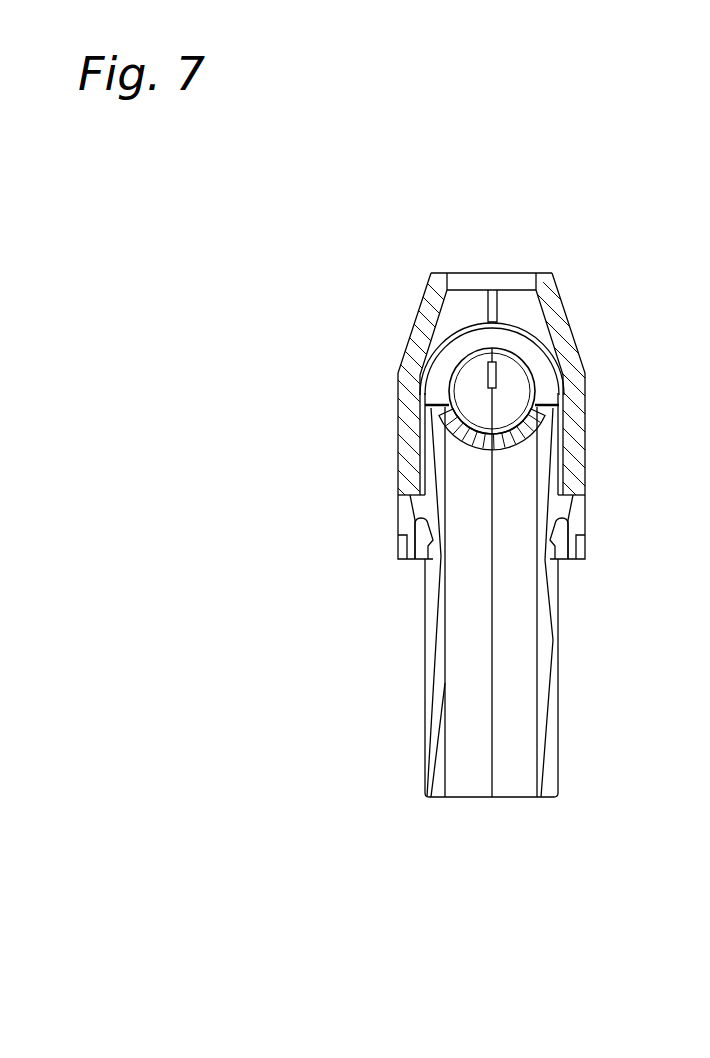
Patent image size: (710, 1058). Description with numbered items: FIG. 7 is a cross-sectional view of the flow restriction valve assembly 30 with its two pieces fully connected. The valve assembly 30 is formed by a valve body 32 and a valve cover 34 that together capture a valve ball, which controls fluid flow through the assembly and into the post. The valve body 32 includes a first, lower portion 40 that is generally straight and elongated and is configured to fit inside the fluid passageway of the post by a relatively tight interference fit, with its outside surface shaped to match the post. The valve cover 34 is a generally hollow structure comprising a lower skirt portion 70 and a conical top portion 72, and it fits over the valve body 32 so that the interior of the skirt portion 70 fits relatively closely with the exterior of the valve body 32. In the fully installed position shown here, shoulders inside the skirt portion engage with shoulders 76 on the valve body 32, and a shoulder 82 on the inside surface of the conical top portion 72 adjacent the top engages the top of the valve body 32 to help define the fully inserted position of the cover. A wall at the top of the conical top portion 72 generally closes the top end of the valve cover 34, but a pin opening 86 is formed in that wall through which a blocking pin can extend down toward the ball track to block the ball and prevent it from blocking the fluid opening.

The flow restriction valve assembly 30 is at (370, 255).
The valve body 32 is at (402, 672).
The valve cover 34 is at (603, 330).
The first, lower portion 40 is at (550, 633).
The lower skirt portion 70 is at (580, 430).
The conical top portion 72 is at (565, 288).
The shoulders 76 is at (410, 495).
The shoulder 82 is at (494, 313).
The pin opening 86 is at (472, 282).